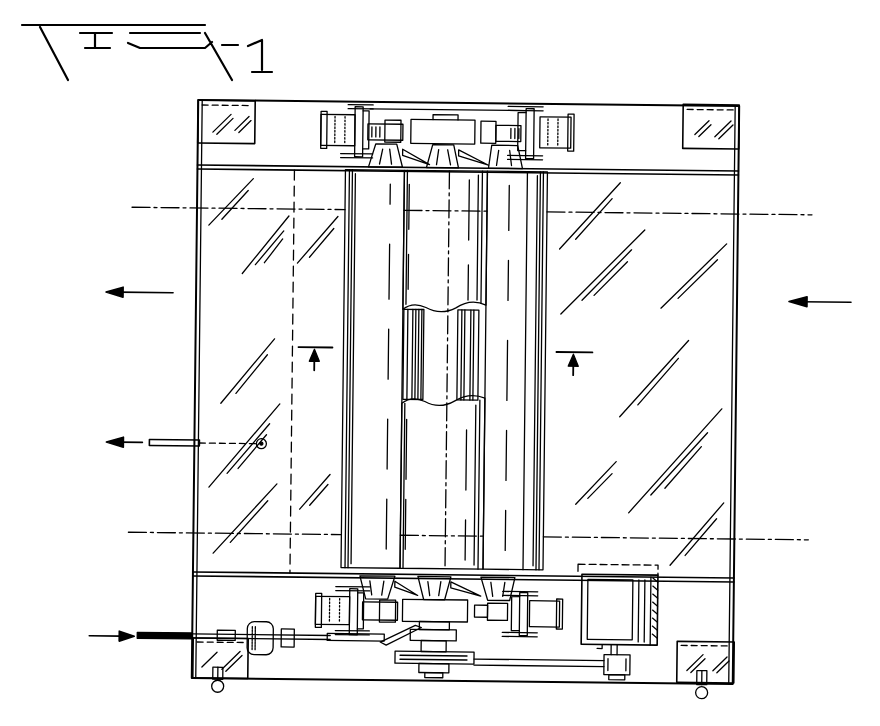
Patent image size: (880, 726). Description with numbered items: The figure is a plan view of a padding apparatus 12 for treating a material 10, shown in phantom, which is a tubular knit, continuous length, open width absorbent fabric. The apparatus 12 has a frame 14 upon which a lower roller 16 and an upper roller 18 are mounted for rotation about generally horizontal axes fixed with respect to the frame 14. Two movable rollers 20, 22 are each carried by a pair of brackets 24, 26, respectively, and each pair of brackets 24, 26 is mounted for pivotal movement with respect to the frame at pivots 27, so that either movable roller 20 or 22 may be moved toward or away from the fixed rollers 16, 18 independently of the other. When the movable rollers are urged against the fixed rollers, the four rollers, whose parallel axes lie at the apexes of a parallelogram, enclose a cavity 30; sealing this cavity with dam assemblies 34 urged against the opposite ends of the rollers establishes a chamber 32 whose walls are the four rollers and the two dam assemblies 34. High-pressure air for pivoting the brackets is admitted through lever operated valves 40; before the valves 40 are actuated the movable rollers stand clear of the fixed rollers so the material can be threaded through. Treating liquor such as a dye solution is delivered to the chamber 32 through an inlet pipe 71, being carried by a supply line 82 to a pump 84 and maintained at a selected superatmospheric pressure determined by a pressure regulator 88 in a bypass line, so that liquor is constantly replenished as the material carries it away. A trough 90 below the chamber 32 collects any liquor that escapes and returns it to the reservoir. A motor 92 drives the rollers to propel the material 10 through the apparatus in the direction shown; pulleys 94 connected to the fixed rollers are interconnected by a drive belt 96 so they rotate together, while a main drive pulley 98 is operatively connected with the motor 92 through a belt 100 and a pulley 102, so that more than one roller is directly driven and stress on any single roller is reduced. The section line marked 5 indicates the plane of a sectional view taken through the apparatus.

The section line 5- 5 is at (445, 350).
The material 10 is at (674, 212).
The apparatus 12 is at (625, 103).
The frame 14 is at (724, 136).
The lower roller 16 is at (447, 331).
The upper roller 18 is at (417, 231).
The movable roller 20 is at (545, 453).
The movable roller 22 is at (350, 445).
The brackets 24 is at (556, 130).
The brackets 26 is at (330, 125).
The pivots 27 is at (355, 106).
The cavity 30 is at (437, 340).
The chamber 32 is at (452, 381).
The dam assemblies 34 is at (476, 120).
The lever operated valve 40 is at (214, 692).
The inlet pipe 71 is at (363, 643).
The supply line 82 is at (163, 638).
The pump 84 is at (252, 628).
The pressure regulator 88 is at (289, 652).
The trough 90 is at (218, 368).
The motor 92 is at (632, 612).
The pulleys 94 is at (404, 641).
The drive belt 96 is at (437, 652).
The main drive pulley 98 is at (458, 665).
The belt 100 is at (578, 664).
The pulley 102 is at (627, 673).